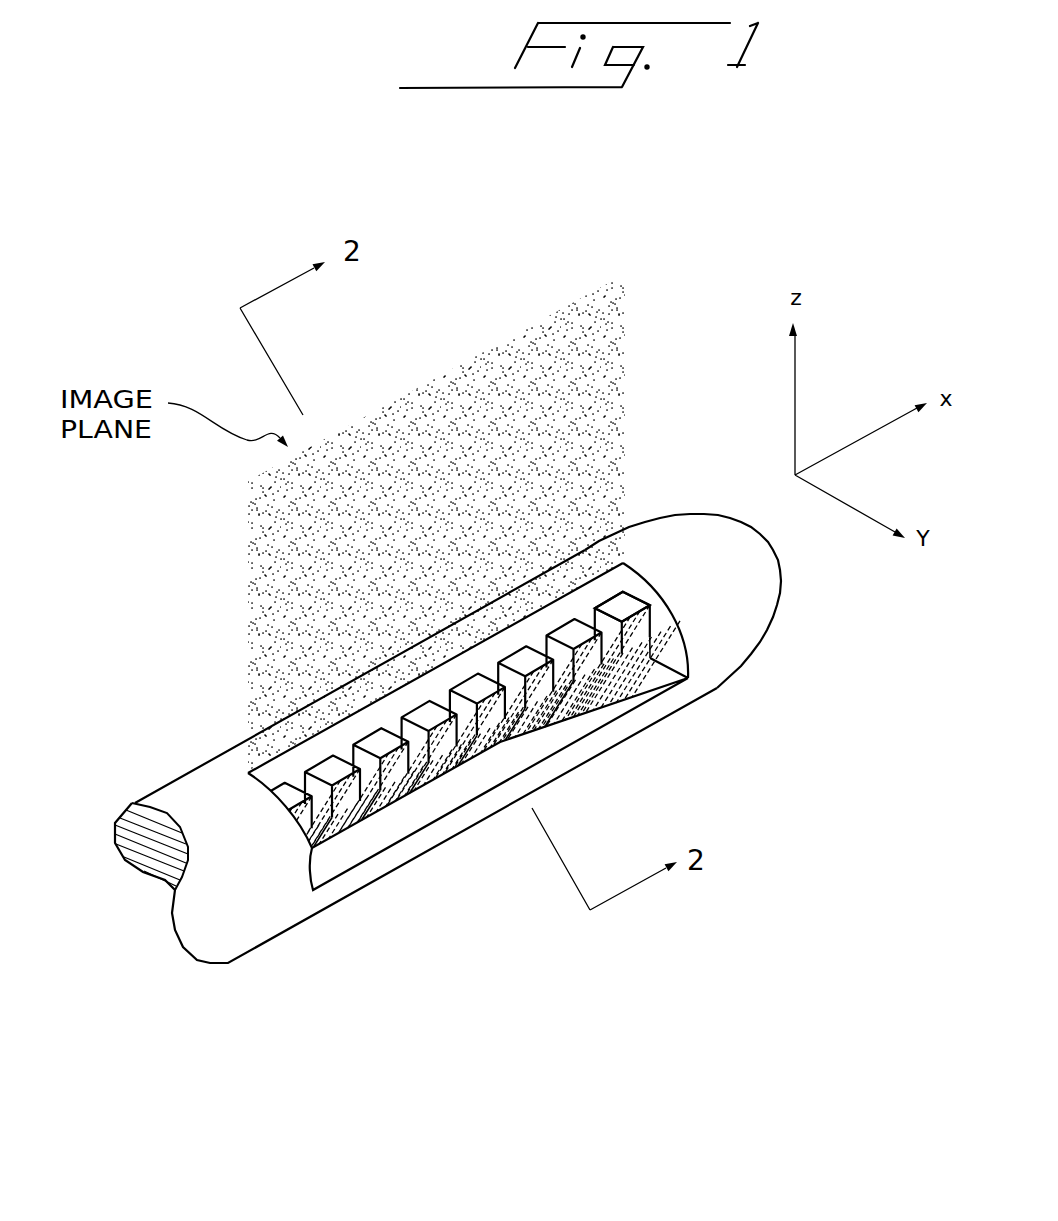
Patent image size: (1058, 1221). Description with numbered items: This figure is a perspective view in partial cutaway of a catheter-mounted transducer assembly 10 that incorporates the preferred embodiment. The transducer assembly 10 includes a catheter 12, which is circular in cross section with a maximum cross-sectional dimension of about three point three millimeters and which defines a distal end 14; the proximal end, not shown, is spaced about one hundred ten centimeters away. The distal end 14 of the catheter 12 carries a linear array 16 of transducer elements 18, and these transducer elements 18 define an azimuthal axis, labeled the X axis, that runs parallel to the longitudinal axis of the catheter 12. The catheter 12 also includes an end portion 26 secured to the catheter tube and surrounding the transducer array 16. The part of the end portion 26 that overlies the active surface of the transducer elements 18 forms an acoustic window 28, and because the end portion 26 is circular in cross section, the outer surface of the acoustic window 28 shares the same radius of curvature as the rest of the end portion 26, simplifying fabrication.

The transducer assembly 10 is at (179, 720).
The catheter 12 is at (250, 950).
The distal end 14 is at (730, 712).
The linear array 16 is at (446, 795).
The transducer elements 18 is at (642, 620).
The end portion 26 is at (633, 740).
The acoustic window 28 is at (598, 593).